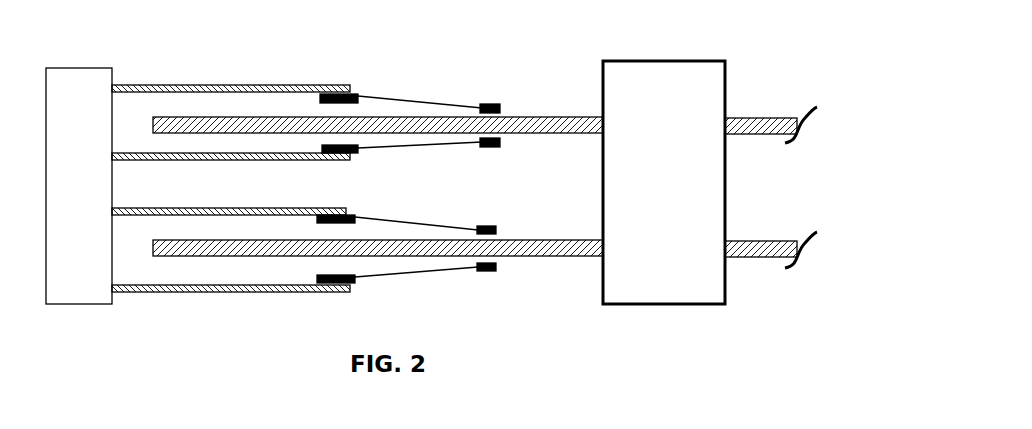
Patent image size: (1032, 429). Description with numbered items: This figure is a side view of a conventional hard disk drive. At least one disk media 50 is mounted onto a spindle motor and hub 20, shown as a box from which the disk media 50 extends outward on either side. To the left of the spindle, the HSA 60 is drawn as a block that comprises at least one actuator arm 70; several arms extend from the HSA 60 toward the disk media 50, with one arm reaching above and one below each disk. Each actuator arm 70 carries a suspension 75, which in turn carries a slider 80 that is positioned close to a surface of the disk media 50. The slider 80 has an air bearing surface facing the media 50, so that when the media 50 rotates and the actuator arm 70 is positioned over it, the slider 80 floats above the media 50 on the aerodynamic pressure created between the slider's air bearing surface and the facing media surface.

The spindle motor and hub 20 is at (664, 60).
The disk media 50 is at (533, 116).
The HSA 60 is at (78, 67).
The actuator arm 70 is at (230, 85).
The suspension 75 is at (385, 95).
The slider 80 is at (492, 103).